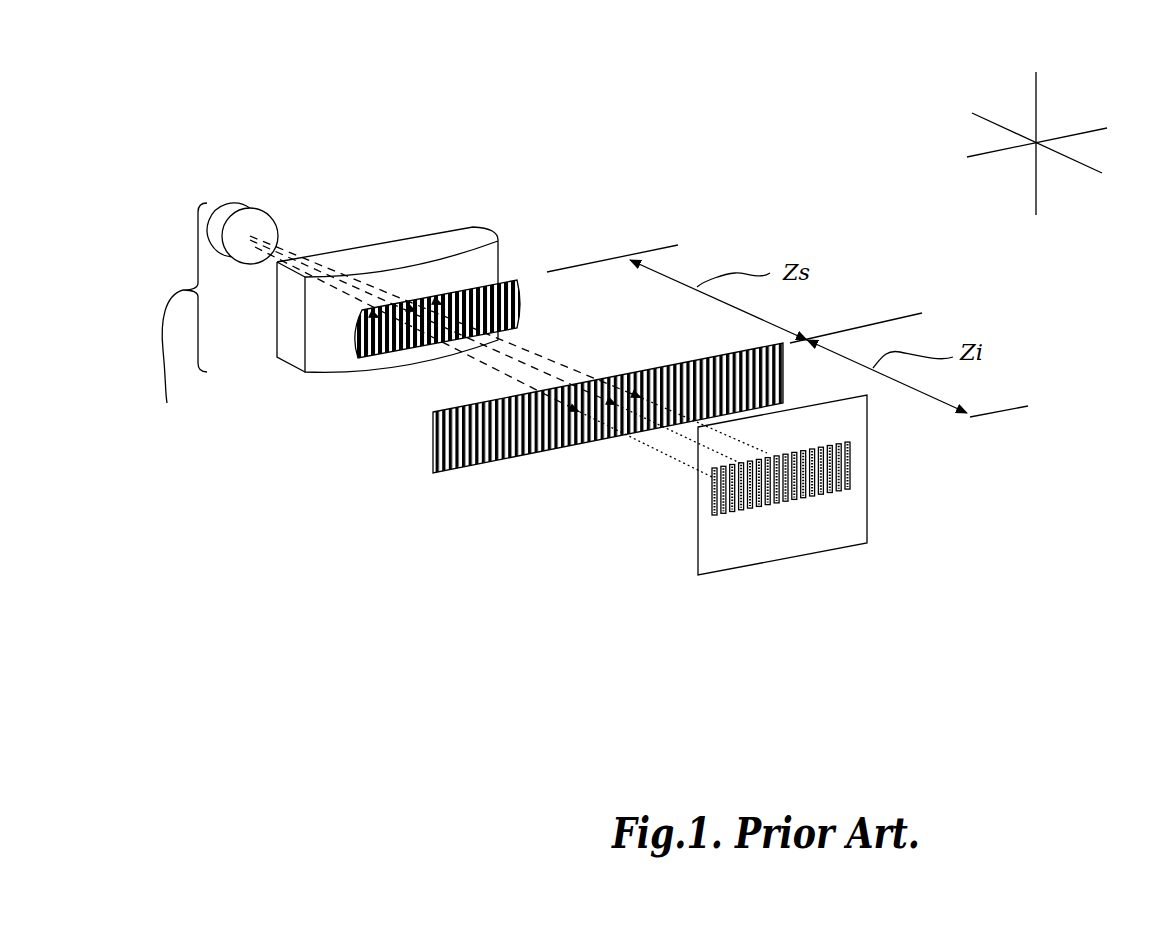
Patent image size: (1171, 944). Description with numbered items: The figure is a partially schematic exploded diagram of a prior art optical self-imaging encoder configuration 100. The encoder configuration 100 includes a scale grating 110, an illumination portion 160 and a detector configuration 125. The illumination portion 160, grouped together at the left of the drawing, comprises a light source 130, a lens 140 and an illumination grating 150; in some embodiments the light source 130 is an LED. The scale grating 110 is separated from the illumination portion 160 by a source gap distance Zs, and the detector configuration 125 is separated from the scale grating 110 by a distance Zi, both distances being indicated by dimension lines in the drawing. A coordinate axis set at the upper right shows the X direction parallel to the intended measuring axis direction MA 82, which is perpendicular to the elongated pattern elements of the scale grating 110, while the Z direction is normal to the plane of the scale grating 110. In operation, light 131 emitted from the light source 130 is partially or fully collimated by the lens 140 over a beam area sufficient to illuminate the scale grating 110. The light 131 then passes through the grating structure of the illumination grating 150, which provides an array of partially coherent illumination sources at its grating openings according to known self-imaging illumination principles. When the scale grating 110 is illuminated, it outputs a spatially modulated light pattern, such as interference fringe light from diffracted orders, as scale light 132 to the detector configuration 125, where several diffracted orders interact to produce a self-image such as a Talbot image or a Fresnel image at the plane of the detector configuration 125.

The measuring axis direction MA 82 is at (1065, 127).
The encoder configuration 100 is at (997, 283).
The scale grating 110 is at (670, 362).
The detector configuration 125 is at (730, 572).
The light source 130 is at (264, 265).
The light 131 is at (290, 248).
The scale light 132 is at (652, 460).
The lens 140 is at (293, 316).
The illumination grating 150 is at (357, 342).
The illumination portion 160 is at (186, 310).